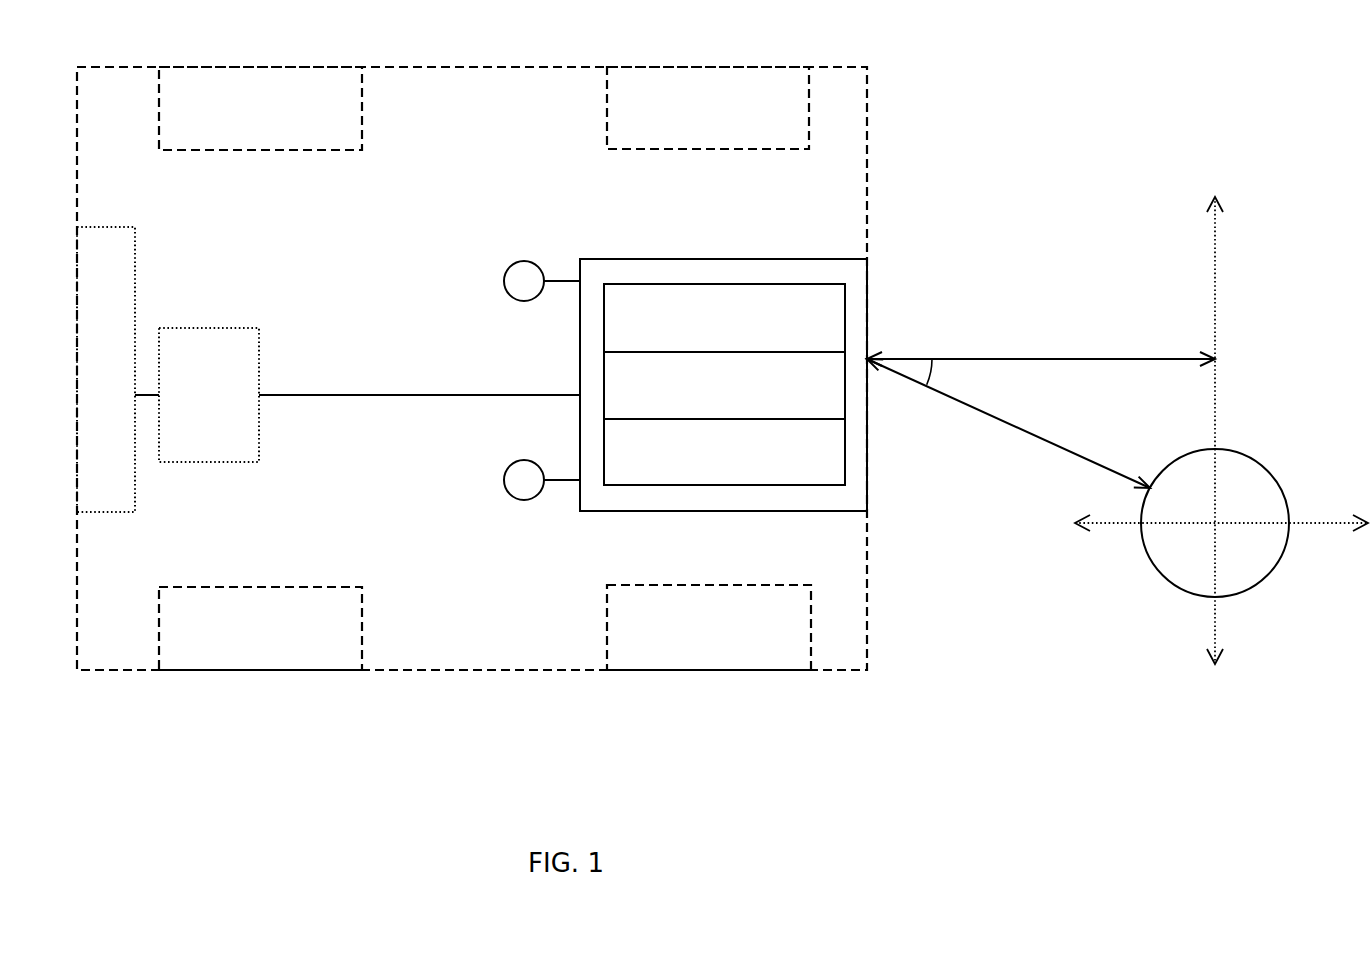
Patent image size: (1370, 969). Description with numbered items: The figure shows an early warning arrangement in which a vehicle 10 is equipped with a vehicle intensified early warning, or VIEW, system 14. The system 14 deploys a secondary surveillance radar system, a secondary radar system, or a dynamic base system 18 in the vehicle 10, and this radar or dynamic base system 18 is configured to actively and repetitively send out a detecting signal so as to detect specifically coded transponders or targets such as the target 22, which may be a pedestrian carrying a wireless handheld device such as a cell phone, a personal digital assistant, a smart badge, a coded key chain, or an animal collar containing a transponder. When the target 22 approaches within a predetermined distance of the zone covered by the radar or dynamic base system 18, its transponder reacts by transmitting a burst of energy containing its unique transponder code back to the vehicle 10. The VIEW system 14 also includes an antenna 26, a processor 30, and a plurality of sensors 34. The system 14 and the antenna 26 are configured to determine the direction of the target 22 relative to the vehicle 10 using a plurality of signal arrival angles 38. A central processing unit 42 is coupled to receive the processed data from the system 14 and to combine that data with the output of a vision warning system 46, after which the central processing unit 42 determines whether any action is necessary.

The vehicle 10 is at (962, 148).
The vehicle intensified early warning (VIEW) system 14 is at (655, 258).
The dynamic base system 18 is at (845, 476).
The target 22 is at (1229, 449).
The antenna 26 is at (845, 326).
The processor 30 is at (606, 376).
The sensors 34 is at (542, 258).
The signal arrival angles 38 is at (937, 377).
The central processing unit 42 is at (259, 362).
The vision warning system 46 is at (135, 285).